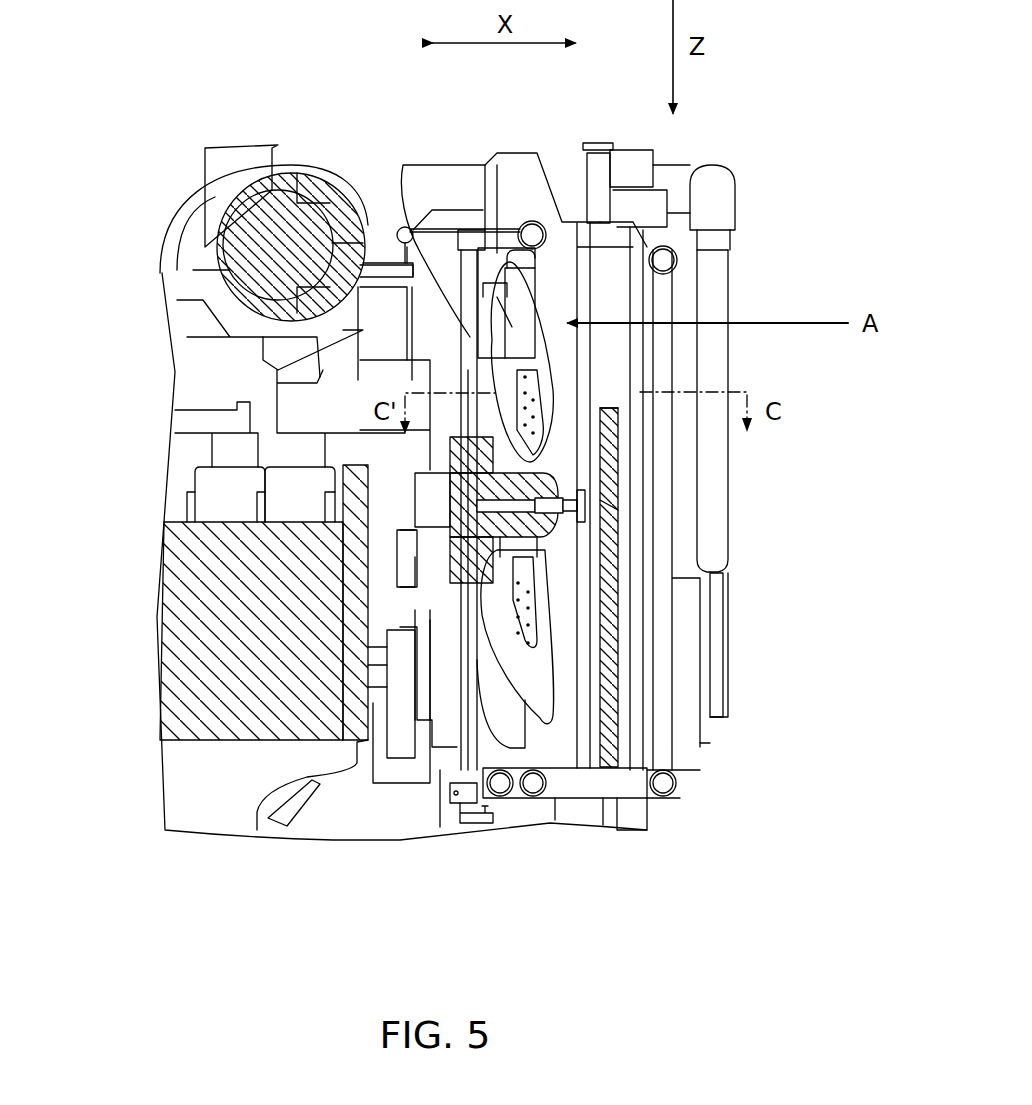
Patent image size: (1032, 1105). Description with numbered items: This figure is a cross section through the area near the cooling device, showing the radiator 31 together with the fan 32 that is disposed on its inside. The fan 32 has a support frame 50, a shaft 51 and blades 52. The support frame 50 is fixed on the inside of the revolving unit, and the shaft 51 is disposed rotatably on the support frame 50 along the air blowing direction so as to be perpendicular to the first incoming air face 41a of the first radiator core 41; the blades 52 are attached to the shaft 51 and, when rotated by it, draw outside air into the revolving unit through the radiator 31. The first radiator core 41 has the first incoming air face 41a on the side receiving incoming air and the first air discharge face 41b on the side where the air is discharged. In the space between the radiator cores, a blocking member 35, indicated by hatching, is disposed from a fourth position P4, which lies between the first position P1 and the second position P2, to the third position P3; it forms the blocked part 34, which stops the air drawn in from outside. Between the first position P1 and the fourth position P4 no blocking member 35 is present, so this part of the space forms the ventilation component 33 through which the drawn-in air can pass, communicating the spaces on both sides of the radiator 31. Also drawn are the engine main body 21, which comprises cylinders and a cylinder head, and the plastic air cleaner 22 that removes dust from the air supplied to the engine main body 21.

The engine main body 21 is at (223, 518).
The air cleaner 22 is at (250, 172).
The radiator 31 is at (607, 232).
The fan 32 is at (447, 200).
The ventilation component 33 is at (610, 310).
The blocked part 34 is at (620, 628).
The blocking member 35 is at (617, 707).
The first radiator core 41 is at (600, 273).
The first incoming air face 41a is at (630, 450).
The first air discharge face 41b is at (587, 605).
The support frame 50 is at (470, 340).
The shaft 51 is at (547, 503).
The blades 52 is at (490, 347).
The first position P1 is at (655, 245).
The second position P2 is at (610, 503).
The third position P3 is at (620, 767).
The fourth position P4 is at (613, 410).